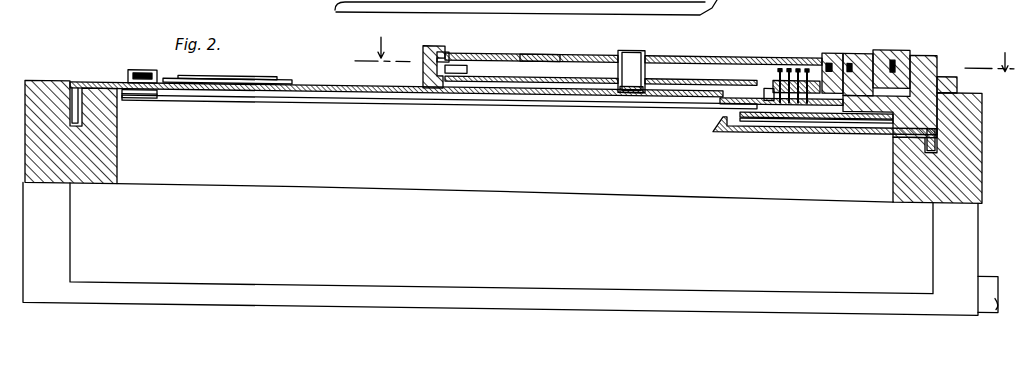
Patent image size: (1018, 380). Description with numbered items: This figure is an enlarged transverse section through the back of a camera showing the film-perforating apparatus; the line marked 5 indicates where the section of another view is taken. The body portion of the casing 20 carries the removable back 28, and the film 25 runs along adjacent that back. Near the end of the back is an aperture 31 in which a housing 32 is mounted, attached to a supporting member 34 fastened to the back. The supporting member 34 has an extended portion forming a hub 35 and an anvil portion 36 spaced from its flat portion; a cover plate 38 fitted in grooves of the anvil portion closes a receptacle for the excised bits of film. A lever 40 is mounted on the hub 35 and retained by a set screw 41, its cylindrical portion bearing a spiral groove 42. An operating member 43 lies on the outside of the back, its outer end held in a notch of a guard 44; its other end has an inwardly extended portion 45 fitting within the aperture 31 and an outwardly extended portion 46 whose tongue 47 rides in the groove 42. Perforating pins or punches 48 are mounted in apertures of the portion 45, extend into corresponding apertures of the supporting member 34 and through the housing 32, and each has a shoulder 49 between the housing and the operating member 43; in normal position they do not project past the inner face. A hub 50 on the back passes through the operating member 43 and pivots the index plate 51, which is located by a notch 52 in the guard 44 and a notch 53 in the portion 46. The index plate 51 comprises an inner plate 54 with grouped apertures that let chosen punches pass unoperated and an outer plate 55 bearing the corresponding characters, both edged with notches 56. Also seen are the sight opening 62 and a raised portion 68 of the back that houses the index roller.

The section line 5- 5 is at (684, 51).
The body portion of the casing 20 is at (105, 152).
The film 25 is at (382, 95).
The removable back 28 is at (295, 184).
The aperture 31 is at (837, 86).
The housing 32 is at (773, 68).
The supporting member 34 is at (745, 103).
The extended portion forming a hub 35 is at (923, 47).
The anvil portion 36 is at (760, 110).
The cover plate 38 is at (860, 121).
The lever 40 is at (855, 63).
The set screw 41 is at (902, 43).
The spiral groove 42 is at (846, 58).
The operating member 43 is at (747, 68).
The guard 44 is at (436, 42).
The inwardly extended portion 45 is at (766, 67).
The outwardly extended portion 46 is at (827, 42).
The tongue 47 is at (868, 48).
The perforating pins or punches 48 is at (797, 47).
The shoulder 49 is at (720, 97).
The hub 50 is at (642, 49).
The index plate 51 is at (588, 49).
The notch 52 is at (448, 49).
The notch 53 is at (825, 47).
The inner plate 54 is at (530, 55).
The outer plate 55 is at (538, 50).
The notches 56 is at (447, 54).
The sight opening 62 is at (275, 74).
The raised portion 68 is at (137, 70).